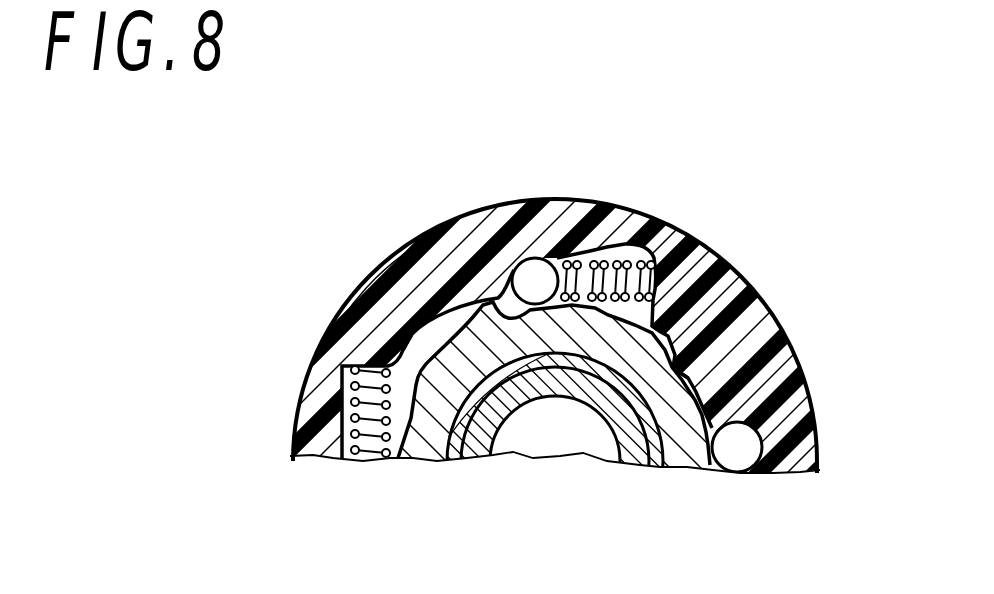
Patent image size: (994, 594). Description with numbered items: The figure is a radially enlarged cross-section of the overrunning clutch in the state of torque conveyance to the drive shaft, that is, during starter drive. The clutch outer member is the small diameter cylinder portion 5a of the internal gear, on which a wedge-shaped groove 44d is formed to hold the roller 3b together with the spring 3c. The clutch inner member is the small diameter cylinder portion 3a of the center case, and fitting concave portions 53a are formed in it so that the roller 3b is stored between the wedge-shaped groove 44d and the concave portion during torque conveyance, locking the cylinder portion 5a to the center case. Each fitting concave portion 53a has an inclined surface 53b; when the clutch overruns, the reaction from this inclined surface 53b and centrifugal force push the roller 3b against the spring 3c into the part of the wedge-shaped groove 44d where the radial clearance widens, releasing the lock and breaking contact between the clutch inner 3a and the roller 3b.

The small diameter cylinder portion 3a is at (685, 447).
The roller 3b is at (545, 250).
The spring 3c is at (660, 245).
The small diameter cylinder portion 5a is at (567, 201).
The wedge-shaped groove 44d is at (618, 246).
The fitting concave portion 53a is at (423, 312).
The inclined surface 53b is at (480, 293).